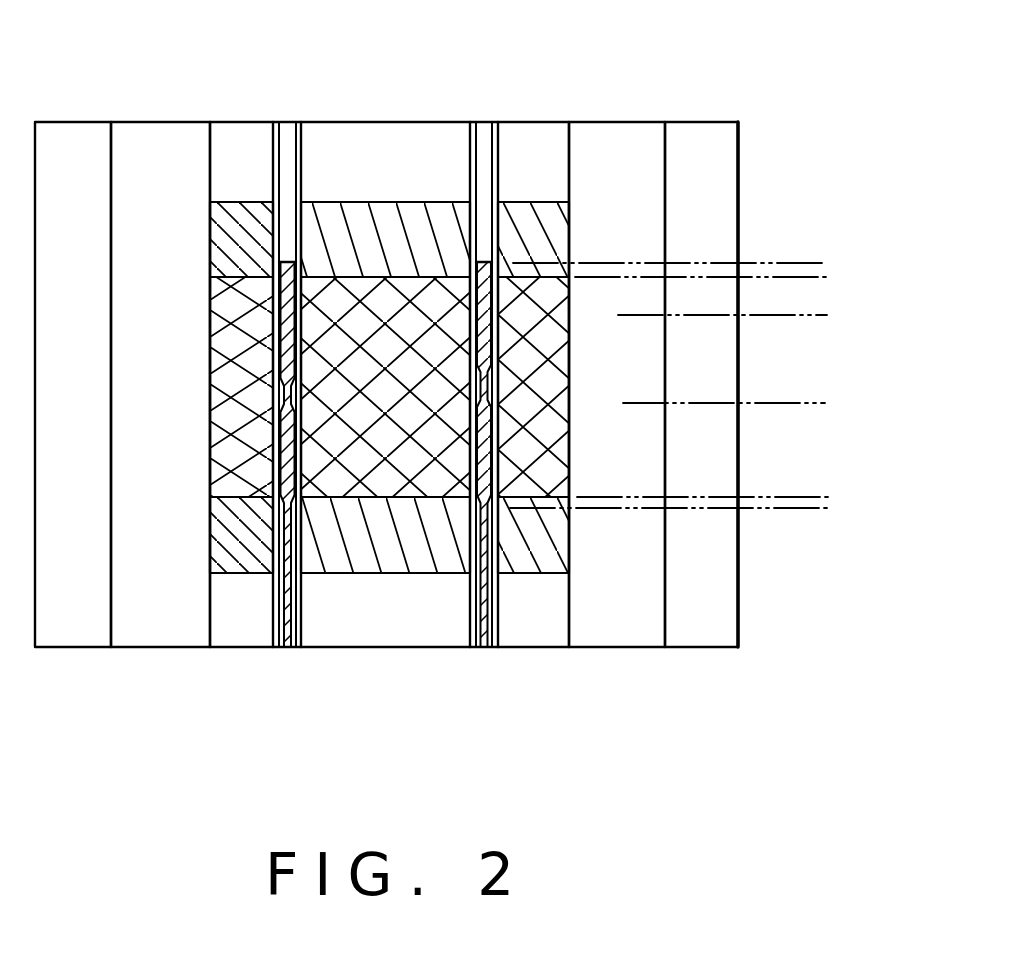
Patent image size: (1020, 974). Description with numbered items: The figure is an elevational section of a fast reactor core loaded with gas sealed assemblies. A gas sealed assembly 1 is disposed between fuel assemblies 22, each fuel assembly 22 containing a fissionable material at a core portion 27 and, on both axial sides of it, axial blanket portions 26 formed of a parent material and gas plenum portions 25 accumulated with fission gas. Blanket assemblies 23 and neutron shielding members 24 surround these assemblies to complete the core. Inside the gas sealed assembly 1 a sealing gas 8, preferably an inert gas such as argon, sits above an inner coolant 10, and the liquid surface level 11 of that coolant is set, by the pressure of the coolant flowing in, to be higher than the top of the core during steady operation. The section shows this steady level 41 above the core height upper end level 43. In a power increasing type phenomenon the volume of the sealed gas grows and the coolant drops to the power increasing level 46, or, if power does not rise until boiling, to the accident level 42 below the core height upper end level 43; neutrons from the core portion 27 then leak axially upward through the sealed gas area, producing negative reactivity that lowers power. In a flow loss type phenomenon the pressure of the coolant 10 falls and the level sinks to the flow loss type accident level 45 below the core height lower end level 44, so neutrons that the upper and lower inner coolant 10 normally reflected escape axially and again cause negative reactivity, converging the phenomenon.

The gas sealed assembly 1 is at (288, 128).
The sealing gas 8 is at (292, 172).
The inner coolant 10 is at (500, 358).
The liquid surface level 11 is at (498, 263).
The fuel assembly 22 is at (413, 126).
The blanket assembly 23 is at (173, 128).
The neutron shielding member 24 is at (83, 128).
The gas plenum portion 25 is at (553, 170).
The axial blanket portion 26 is at (555, 225).
The core portion 27 is at (573, 438).
The steady level 41 is at (808, 263).
The accident level 42 is at (808, 315).
The core height upper end level 43 is at (808, 277).
The core height lower end level 44 is at (810, 497).
The flow loss type accident level 45 is at (810, 508).
The power increasing level 46 is at (811, 403).